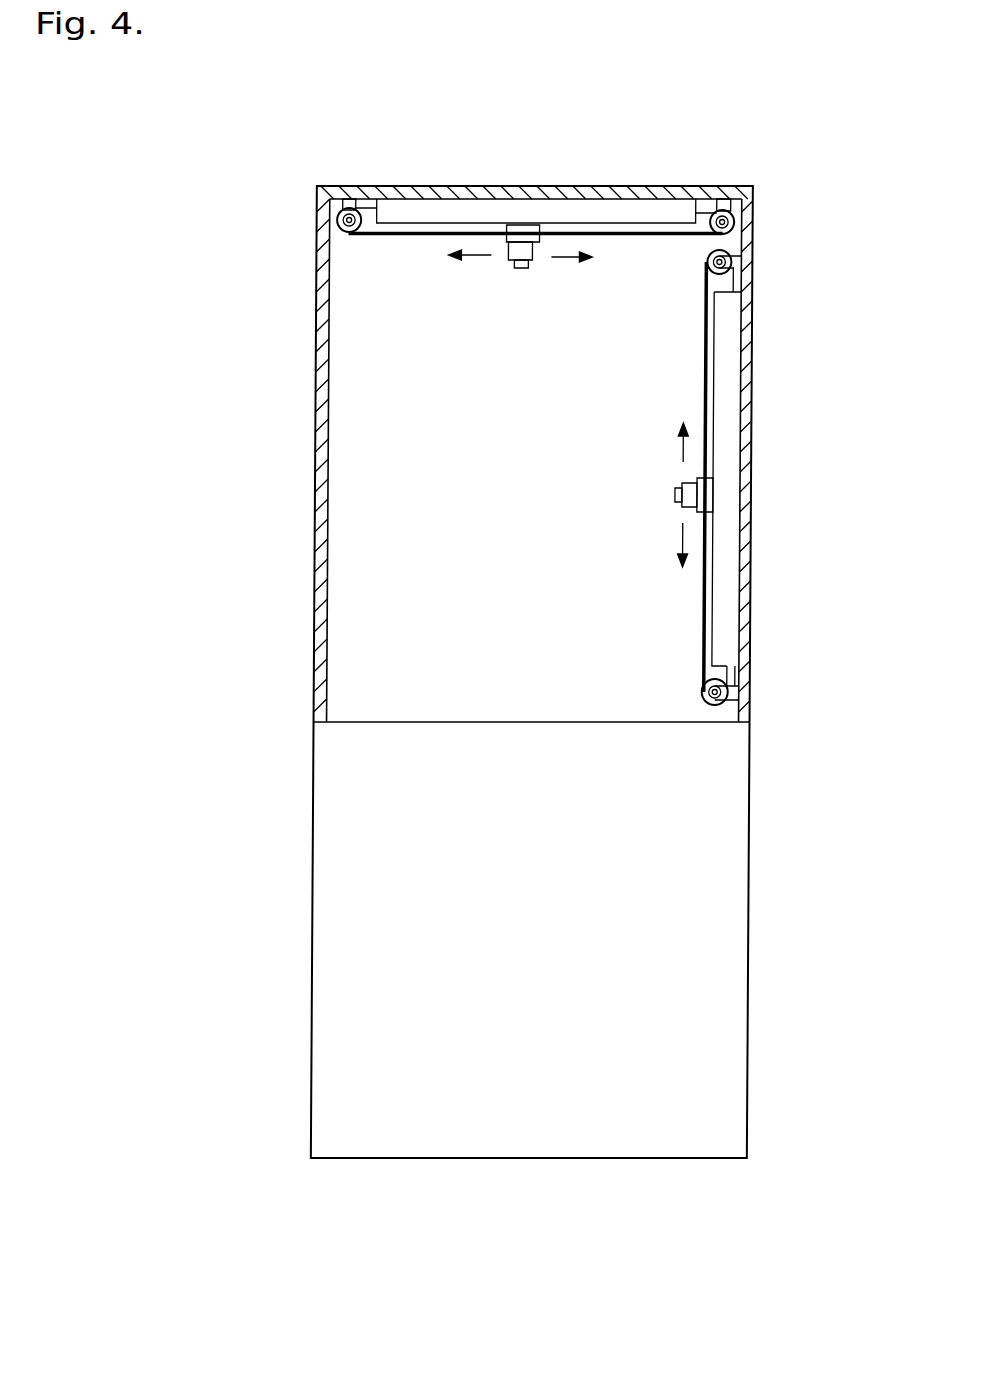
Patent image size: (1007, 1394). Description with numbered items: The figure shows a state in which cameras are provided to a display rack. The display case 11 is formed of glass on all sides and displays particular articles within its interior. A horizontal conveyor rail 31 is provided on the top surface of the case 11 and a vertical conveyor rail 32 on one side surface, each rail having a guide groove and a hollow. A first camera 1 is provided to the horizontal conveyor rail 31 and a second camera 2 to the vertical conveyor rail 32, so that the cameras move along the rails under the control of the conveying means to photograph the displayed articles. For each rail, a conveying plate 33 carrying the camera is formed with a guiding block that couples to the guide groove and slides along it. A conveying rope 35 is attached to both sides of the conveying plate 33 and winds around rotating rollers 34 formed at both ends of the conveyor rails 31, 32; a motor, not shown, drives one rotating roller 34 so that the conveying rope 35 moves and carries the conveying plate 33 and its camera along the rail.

The first camera 1 is at (512, 258).
The second camera 2 is at (688, 495).
The case 11 is at (323, 441).
The horizontal conveyor rail 31 is at (416, 215).
The vertical conveyor rail 32 is at (732, 558).
The conveying plate 33 is at (518, 235).
The rotating roller 34 is at (729, 218).
The conveying rope 35 is at (630, 233).